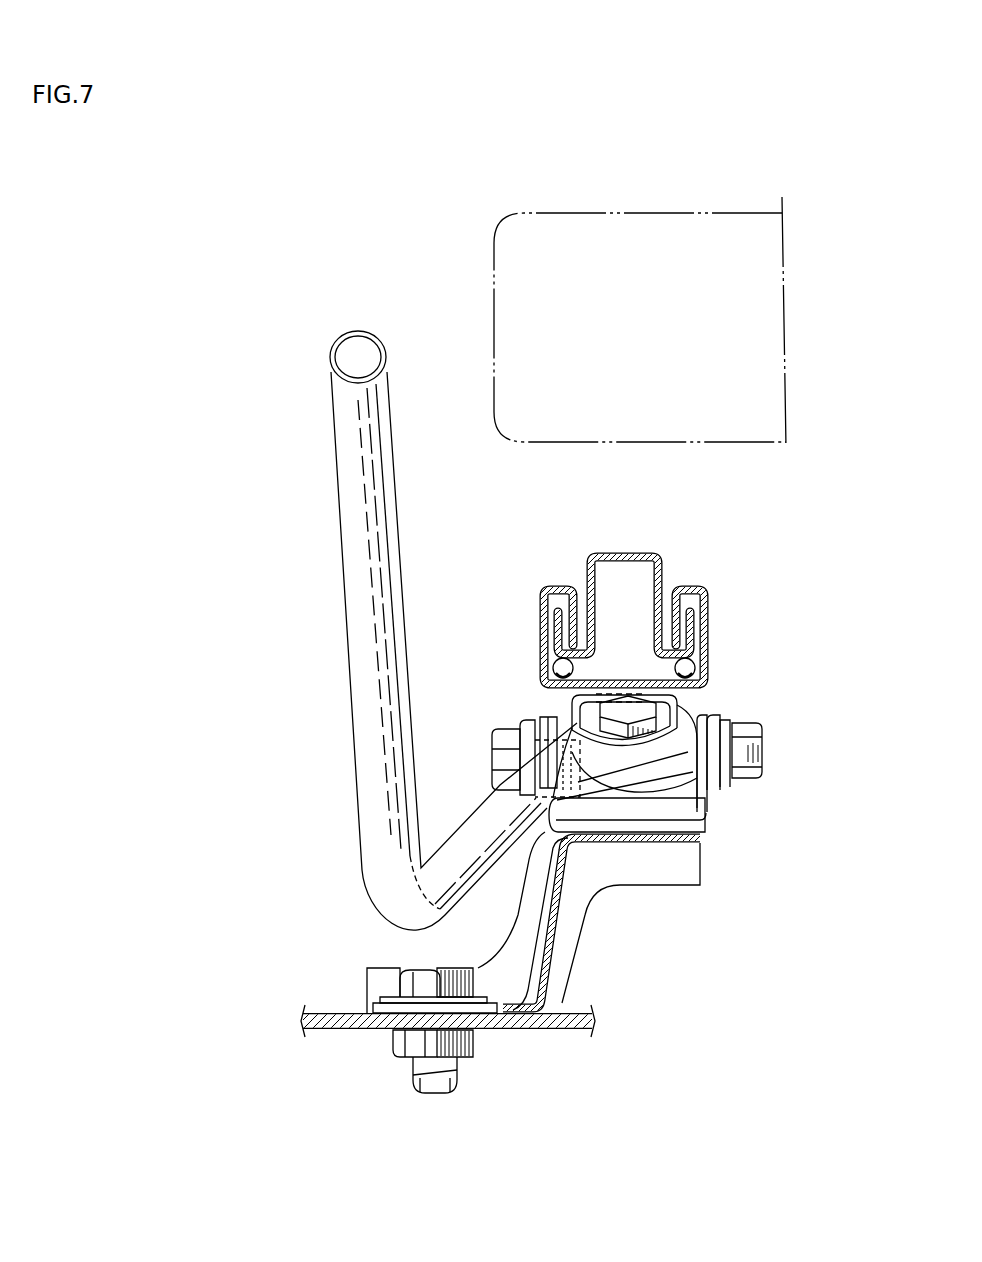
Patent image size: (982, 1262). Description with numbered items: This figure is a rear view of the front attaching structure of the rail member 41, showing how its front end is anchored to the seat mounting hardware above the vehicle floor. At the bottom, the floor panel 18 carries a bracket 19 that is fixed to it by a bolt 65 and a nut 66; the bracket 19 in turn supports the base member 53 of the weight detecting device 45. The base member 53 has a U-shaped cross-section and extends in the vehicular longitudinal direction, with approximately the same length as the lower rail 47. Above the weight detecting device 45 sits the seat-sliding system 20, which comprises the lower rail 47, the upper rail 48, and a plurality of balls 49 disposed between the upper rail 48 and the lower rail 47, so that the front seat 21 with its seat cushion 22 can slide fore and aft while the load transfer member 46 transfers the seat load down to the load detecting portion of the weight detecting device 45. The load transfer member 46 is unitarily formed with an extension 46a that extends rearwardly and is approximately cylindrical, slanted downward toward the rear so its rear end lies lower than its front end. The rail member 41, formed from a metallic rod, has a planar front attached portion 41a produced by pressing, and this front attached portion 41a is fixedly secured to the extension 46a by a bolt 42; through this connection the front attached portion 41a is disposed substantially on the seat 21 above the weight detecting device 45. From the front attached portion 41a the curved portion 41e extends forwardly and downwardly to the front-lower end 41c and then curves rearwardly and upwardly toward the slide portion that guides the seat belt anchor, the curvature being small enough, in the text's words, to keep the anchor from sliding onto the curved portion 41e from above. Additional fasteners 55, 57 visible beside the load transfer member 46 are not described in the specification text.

The floor panel 18 is at (325, 1013).
The bracket 19 is at (558, 958).
The seat-sliding system 20 is at (725, 605).
The front seat 21 is at (750, 444).
The seat cushion 22 is at (493, 312).
The rail member 41 is at (327, 523).
The front attached portion 41a is at (636, 775).
The front-lower end 41c is at (402, 921).
The curved portion 41e is at (360, 795).
The bolt 42 is at (618, 694).
The weight detecting device 45 is at (778, 735).
The load transfer member 46 is at (705, 692).
The extension 46a is at (712, 815).
The lower rail 47 is at (548, 645).
The upper rail 48 is at (586, 562).
The balls 49 is at (550, 684).
The base member 53 is at (543, 833).
The nut 55 is at (760, 765).
The bolt 57 is at (497, 757).
The bolt 65 is at (455, 968).
The nut 66 is at (472, 1040).